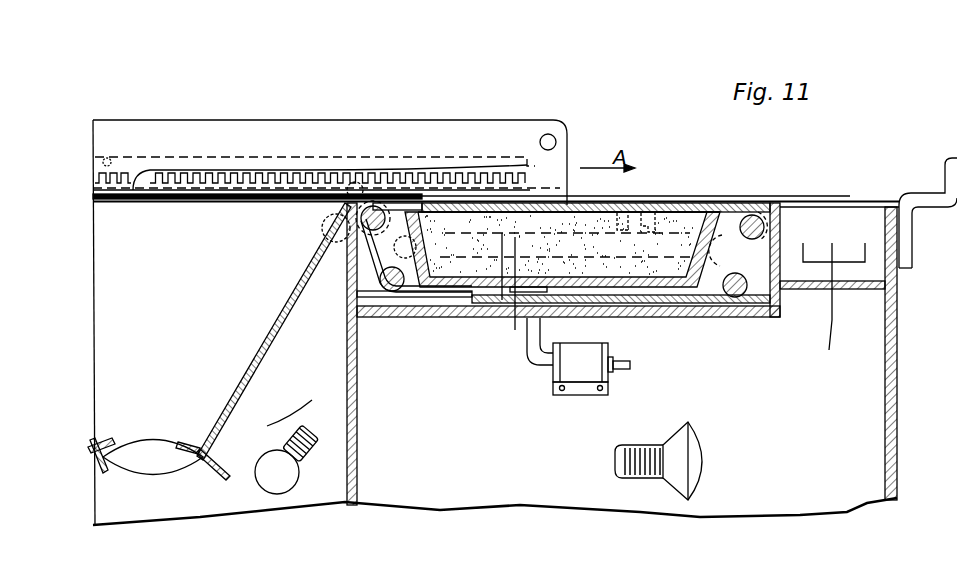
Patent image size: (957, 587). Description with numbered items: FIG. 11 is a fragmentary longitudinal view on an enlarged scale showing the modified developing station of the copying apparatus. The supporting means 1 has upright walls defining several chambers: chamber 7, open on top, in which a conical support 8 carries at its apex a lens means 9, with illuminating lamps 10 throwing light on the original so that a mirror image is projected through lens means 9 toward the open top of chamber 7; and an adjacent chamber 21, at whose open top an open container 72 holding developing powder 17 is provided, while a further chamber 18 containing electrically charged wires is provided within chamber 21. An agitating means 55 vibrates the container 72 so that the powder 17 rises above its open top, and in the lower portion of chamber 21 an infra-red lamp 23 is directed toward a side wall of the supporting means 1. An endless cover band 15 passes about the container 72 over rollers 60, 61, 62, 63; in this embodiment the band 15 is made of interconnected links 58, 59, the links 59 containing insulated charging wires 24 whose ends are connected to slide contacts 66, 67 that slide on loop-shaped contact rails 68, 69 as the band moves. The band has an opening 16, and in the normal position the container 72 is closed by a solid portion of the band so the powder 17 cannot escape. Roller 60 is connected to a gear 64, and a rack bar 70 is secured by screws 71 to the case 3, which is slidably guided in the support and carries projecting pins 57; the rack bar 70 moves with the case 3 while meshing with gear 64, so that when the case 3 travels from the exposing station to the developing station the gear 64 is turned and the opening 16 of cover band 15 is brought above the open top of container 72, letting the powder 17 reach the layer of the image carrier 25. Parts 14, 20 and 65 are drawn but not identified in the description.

The supporting means 1 is at (898, 352).
The case 3 is at (273, 145).
The chamber 7 is at (183, 248).
The conical support 8 is at (252, 362).
The lens means 9 is at (157, 467).
The illuminating lamps 10 is at (270, 484).
The tray 14 is at (733, 220).
The cover band 15 is at (482, 297).
The opening 16 is at (447, 297).
The developing powder 17 is at (440, 217).
The chamber 18 is at (853, 220).
The lid profile 20 is at (930, 200).
The chamber 21 is at (710, 494).
The infra-red lamp 23 is at (677, 478).
The charging wires 24 is at (577, 206).
The image carrier 25 is at (148, 194).
The agitating means 55 is at (572, 368).
The projecting pins 57 is at (549, 134).
The links 58 is at (551, 206).
The links 59 is at (512, 206).
The roller 60 is at (356, 186).
The roller 61 is at (757, 216).
The roller 62 is at (735, 292).
The roller 63 is at (391, 288).
The gear 64 is at (372, 203).
The gear 65 is at (376, 208).
The slide contact 66 is at (621, 223).
The slide contact 67 is at (649, 223).
The contact rail 68 is at (502, 300).
The contact rail 69 is at (514, 296).
The rack bar 70 is at (292, 177).
The screws 71 is at (106, 158).
The container 72 is at (430, 287).